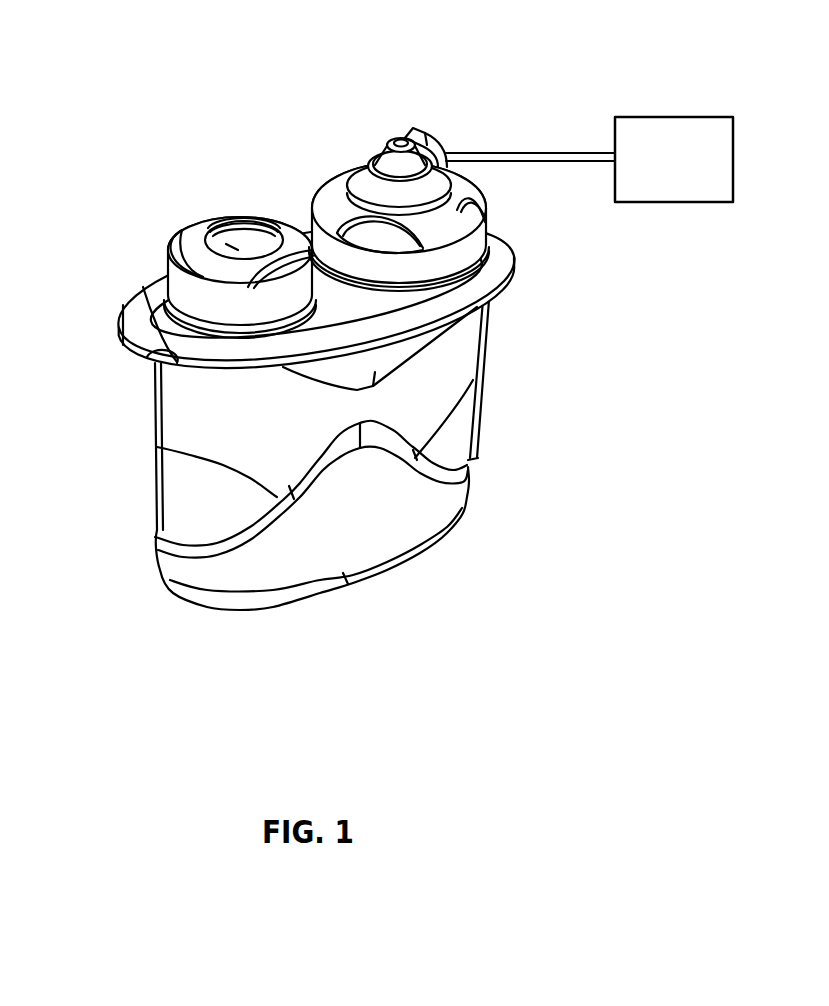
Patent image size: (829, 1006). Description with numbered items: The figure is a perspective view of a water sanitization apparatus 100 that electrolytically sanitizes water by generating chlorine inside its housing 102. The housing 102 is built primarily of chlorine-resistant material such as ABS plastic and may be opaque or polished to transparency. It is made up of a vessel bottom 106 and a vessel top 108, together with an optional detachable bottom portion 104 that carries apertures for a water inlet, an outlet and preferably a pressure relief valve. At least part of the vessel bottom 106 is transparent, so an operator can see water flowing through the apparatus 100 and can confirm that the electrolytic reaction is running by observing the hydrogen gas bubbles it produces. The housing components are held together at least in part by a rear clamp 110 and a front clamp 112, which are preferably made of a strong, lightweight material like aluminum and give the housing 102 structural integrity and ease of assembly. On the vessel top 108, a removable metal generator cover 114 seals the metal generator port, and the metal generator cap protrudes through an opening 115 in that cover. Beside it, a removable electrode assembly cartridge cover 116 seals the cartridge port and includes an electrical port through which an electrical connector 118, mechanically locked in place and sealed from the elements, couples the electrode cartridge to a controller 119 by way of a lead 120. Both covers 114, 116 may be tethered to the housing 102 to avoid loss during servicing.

The water sanitization apparatus 100 is at (490, 86).
The housing 102 is at (514, 460).
The detachable bottom portion 104 is at (469, 500).
The vessel bottom 106 is at (157, 495).
The vessel top 108 is at (350, 306).
The rear clamp 110 is at (145, 285).
The front clamp 112 is at (510, 268).
The metal generator cover 114 is at (188, 222).
The opening 115 is at (230, 242).
The electrode assembly cartridge cover 116 is at (482, 193).
The electrical connector 118 is at (368, 160).
The controller 119 is at (717, 117).
The lead 120 is at (448, 147).